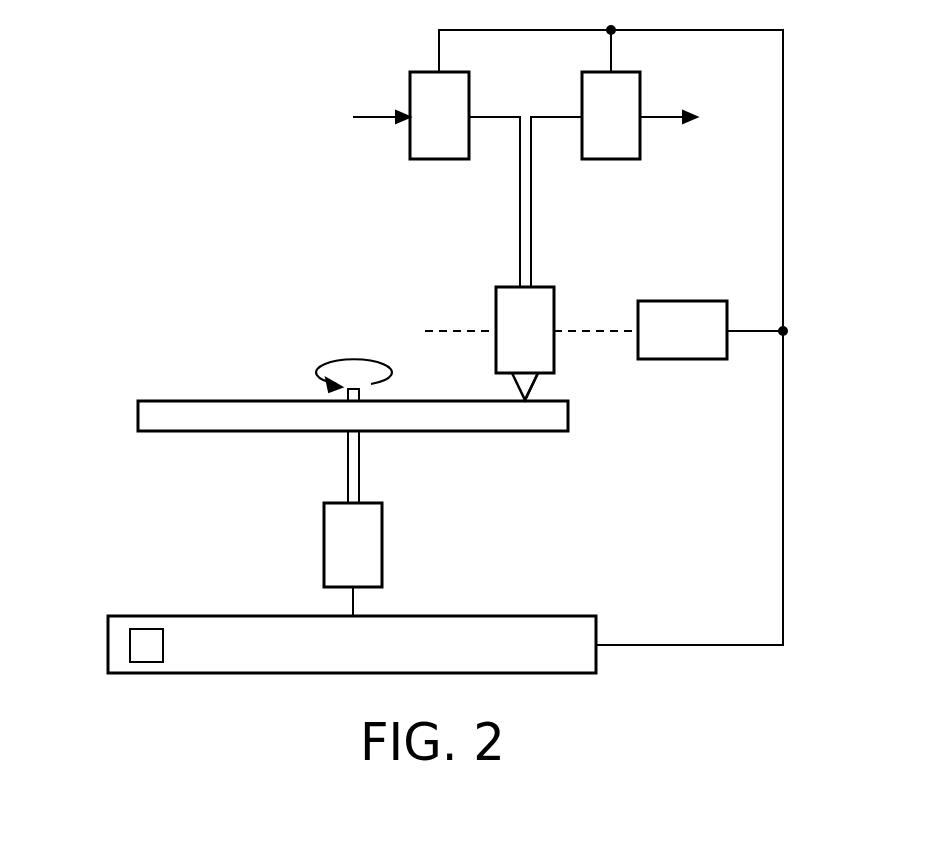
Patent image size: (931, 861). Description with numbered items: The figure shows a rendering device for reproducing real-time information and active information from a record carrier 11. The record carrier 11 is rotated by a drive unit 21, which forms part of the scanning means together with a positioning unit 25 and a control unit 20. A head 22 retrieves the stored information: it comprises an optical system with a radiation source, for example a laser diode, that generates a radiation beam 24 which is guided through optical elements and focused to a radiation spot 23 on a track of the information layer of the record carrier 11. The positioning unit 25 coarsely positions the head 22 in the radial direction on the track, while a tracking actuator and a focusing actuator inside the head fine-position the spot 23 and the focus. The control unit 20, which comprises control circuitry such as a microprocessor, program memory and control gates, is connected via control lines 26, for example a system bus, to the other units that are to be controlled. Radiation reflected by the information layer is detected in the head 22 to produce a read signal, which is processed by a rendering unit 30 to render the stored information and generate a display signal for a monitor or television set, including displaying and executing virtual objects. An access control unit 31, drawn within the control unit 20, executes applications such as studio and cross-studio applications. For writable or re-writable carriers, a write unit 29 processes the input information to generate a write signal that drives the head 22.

The record carrier 11 is at (520, 432).
The control unit 20 is at (518, 616).
The drive unit 21 is at (382, 547).
The head 22 is at (496, 306).
The radiation spot 23 is at (536, 400).
The radiation beam 24 is at (515, 389).
The positioning unit 25 is at (683, 301).
The control lines 26 is at (783, 140).
The write unit 29 is at (439, 159).
The rendering unit 30 is at (611, 159).
The access control unit 31 is at (146, 662).